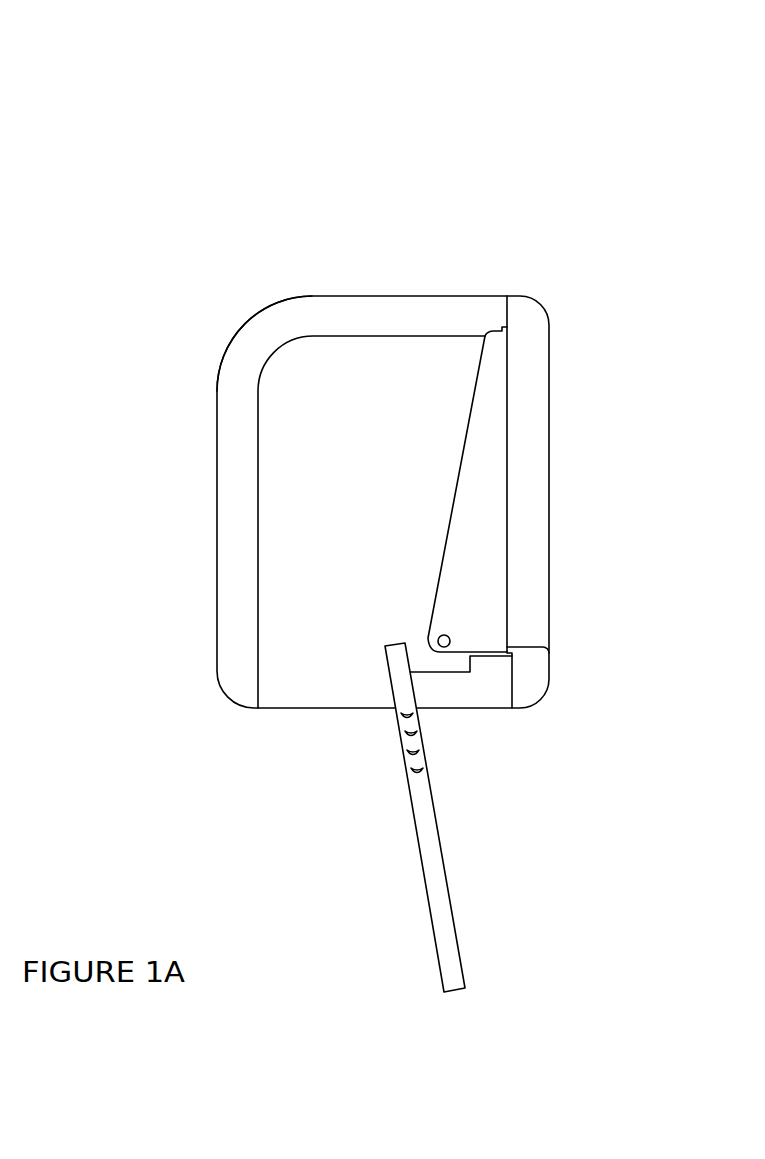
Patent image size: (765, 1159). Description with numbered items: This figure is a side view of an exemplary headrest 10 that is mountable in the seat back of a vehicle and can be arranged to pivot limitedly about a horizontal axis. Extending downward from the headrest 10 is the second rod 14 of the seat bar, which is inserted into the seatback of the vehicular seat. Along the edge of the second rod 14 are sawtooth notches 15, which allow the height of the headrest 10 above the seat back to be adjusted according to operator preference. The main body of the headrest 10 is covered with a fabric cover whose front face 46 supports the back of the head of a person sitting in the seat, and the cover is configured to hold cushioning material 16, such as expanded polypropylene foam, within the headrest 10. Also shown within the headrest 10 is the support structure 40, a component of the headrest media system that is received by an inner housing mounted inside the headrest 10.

The headrest 10 is at (153, 155).
The second rod 14 is at (437, 908).
The sawtooth notches 15 is at (427, 774).
The cushioning material 16 is at (238, 508).
The support structure 40 is at (497, 547).
The front face 46 is at (247, 325).